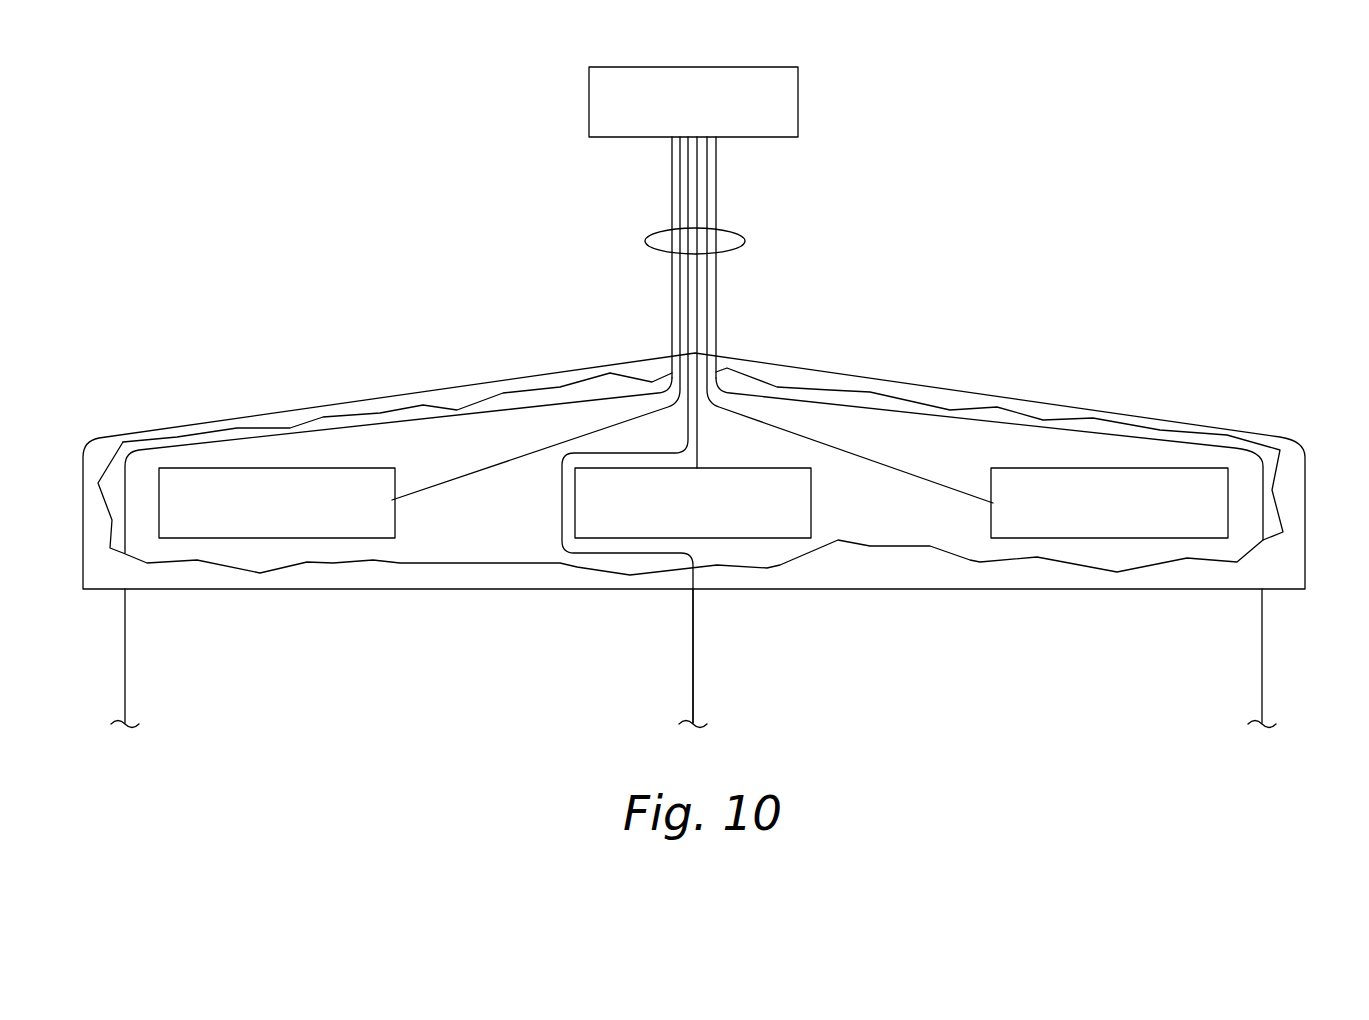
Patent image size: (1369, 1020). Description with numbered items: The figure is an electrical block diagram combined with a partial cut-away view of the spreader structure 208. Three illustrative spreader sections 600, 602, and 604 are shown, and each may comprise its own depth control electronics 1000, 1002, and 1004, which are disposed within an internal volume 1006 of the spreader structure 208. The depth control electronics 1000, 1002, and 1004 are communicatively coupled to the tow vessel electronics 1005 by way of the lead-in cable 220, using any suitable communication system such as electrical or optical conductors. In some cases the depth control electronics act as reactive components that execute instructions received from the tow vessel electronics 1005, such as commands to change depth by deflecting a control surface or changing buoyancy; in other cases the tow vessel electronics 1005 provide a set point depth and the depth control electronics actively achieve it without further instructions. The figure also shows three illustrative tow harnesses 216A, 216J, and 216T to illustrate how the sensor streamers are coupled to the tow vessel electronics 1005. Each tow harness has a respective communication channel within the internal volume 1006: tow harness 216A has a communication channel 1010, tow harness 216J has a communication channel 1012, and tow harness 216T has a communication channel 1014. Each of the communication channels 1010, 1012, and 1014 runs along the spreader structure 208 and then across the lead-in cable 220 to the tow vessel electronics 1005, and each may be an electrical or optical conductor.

The tow vessel electronics 1005 is at (798, 92).
The spreader section 602 is at (572, 183).
The lead-in cable 220 is at (645, 242).
The communication channel 1010 is at (672, 308).
The communication channel 1012 is at (697, 190).
The communication channel 1014 is at (716, 308).
The spreader structure 208 is at (918, 387).
The spreader section 600 is at (217, 360).
The spreader section 604 is at (1170, 360).
The internal volume 1006 is at (863, 528).
The depth control electronics 1000 is at (395, 520).
The depth control electronics 1002 is at (811, 488).
The depth control electronics 1004 is at (991, 520).
The tow harness 216A is at (125, 670).
The tow harness 216J is at (693, 670).
The tow harness 216T is at (1262, 668).